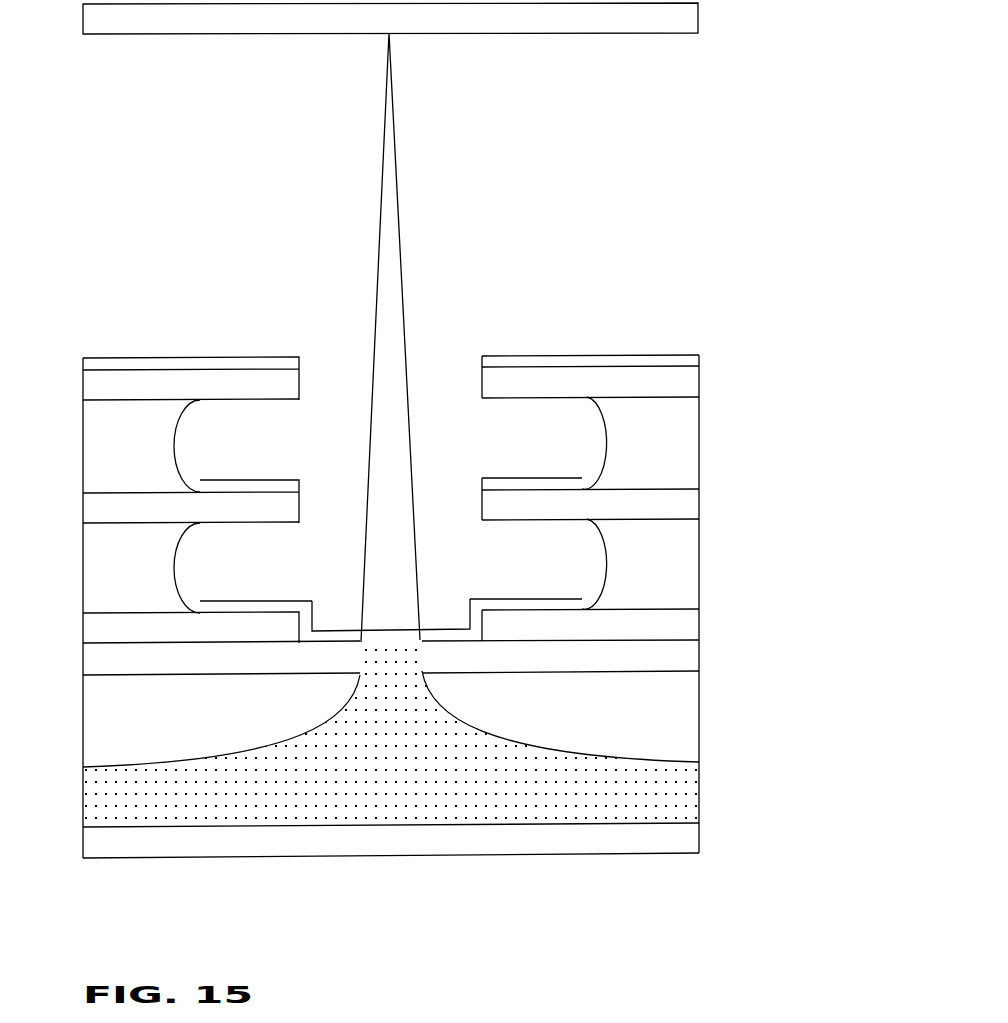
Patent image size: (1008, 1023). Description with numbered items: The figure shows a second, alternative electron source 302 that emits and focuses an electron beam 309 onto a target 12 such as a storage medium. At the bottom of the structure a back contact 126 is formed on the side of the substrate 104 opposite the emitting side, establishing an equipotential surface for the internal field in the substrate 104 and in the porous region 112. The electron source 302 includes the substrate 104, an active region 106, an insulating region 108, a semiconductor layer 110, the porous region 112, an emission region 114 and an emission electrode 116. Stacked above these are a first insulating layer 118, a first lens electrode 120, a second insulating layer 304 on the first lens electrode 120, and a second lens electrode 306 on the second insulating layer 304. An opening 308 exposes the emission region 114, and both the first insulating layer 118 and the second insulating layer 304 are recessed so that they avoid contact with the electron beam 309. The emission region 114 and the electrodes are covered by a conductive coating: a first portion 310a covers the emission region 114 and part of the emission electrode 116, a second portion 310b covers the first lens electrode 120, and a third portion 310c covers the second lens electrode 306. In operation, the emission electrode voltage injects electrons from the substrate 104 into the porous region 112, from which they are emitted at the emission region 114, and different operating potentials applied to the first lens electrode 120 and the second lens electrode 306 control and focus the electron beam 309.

The target 12 is at (642, 34).
The second electron source 302 is at (88, 255).
The electron beam 309 is at (402, 276).
The opening 308 is at (343, 408).
The second lens electrode 306 is at (699, 380).
The second insulating layer 304 is at (699, 430).
The third portion of the conductive coating 310c is at (618, 355).
The second portion of the conductive coating 310b is at (494, 478).
The first portion of the conductive coating 310a is at (500, 598).
The first lens electrode 120 is at (699, 500).
The first insulating layer 118 is at (699, 553).
The emission electrode 116 is at (699, 618).
The semiconductor layer 110 is at (699, 652).
The insulating region 108 is at (662, 726).
The substrate 104 is at (683, 799).
The active region 106 is at (385, 692).
The porous region 112 is at (403, 662).
The emission region 114 is at (383, 643).
The back contact 126 is at (605, 855).